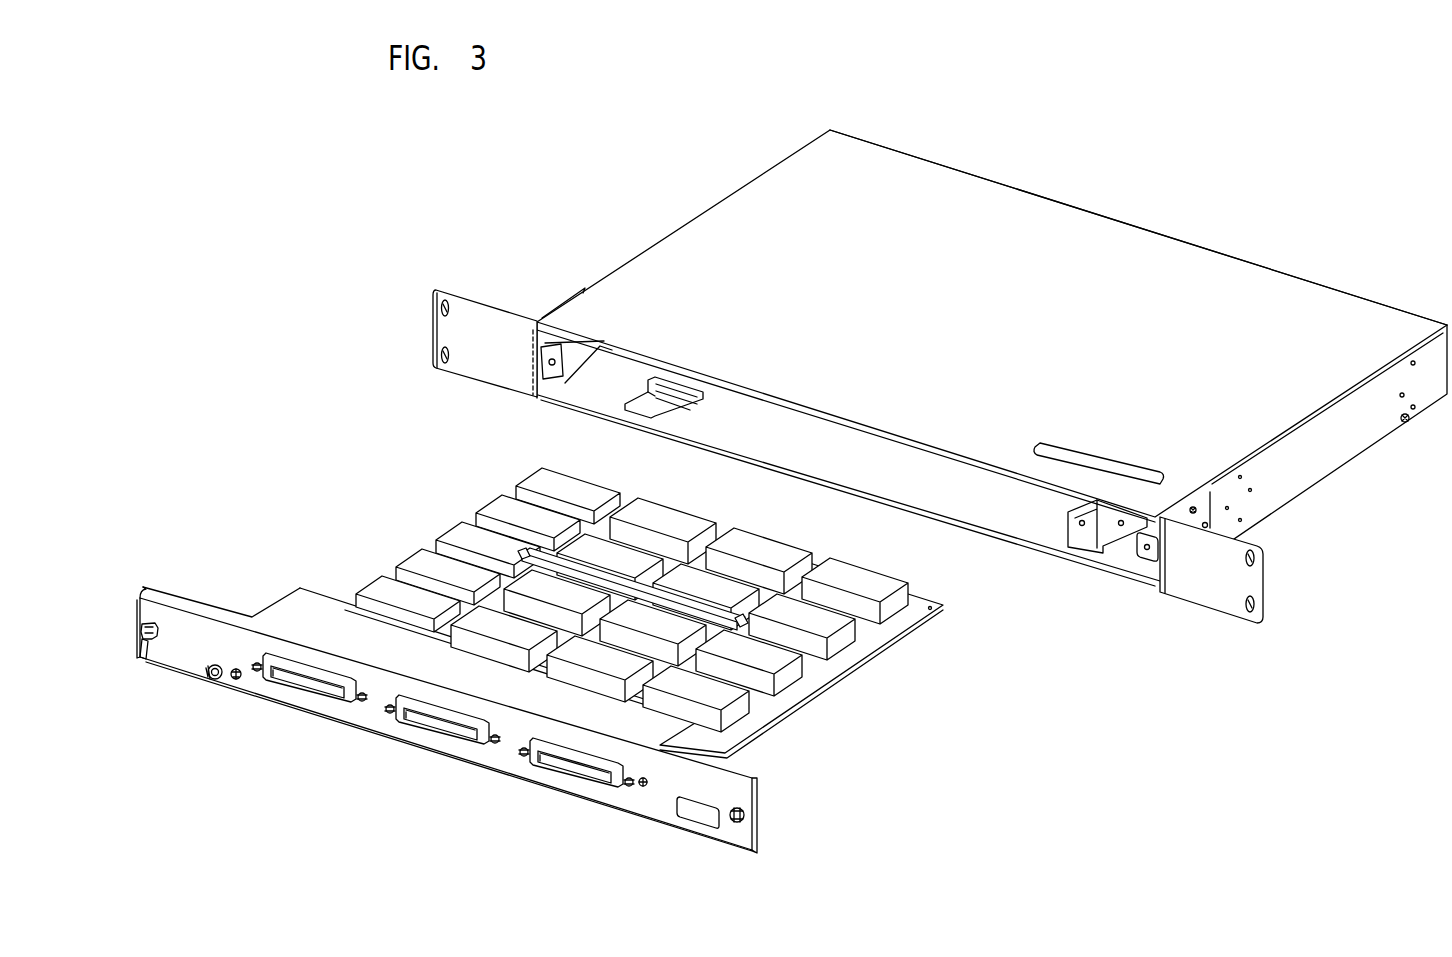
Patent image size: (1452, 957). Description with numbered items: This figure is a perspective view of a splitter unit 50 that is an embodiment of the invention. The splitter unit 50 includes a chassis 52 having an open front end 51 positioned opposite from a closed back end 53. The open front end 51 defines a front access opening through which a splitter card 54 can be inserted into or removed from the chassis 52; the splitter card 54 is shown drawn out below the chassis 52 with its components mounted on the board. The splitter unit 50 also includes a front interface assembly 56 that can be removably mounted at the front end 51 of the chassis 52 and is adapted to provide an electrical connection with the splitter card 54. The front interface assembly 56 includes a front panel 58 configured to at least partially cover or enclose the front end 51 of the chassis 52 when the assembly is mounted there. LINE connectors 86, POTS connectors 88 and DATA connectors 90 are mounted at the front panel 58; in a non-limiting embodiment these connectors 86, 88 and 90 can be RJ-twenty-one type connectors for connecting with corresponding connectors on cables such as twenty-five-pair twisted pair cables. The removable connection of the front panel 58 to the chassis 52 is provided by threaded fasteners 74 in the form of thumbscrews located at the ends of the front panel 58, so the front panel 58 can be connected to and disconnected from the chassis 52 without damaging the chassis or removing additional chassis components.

The splitter unit 50 is at (940, 373).
The open front end 51 is at (1048, 553).
The chassis 52 is at (720, 202).
The closed back end 53 is at (1068, 203).
The splitter card 54 is at (832, 684).
The front interface assembly 56 is at (528, 738).
The front panel 58 is at (757, 824).
The threaded fasteners 74 is at (147, 660).
The LINE connectors 86 is at (575, 775).
The POTS connectors 88 is at (443, 727).
The DATA connectors 90 is at (293, 687).